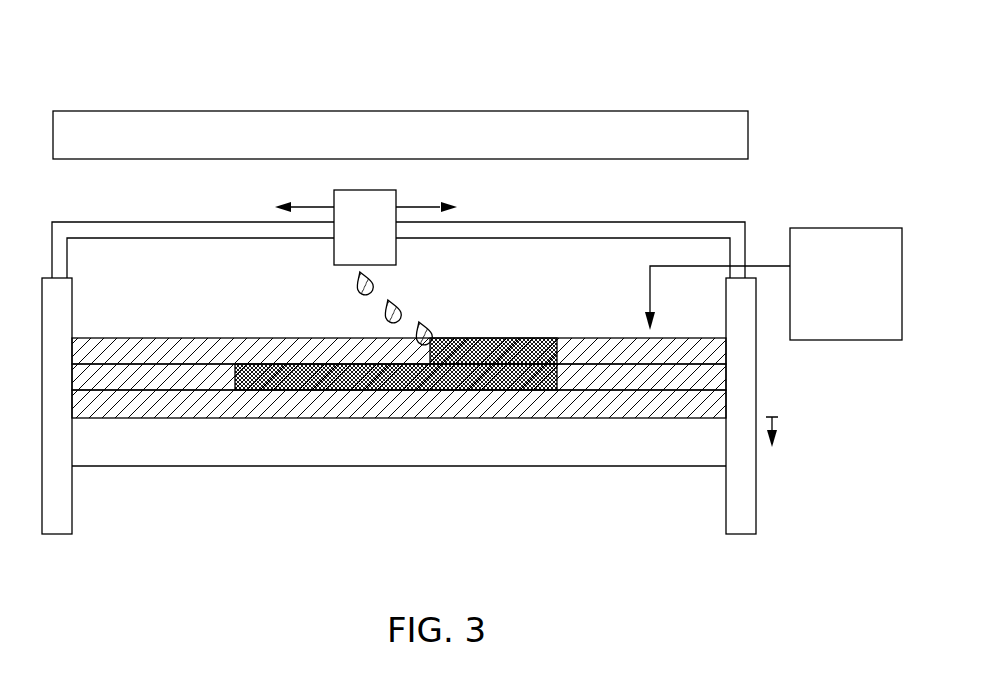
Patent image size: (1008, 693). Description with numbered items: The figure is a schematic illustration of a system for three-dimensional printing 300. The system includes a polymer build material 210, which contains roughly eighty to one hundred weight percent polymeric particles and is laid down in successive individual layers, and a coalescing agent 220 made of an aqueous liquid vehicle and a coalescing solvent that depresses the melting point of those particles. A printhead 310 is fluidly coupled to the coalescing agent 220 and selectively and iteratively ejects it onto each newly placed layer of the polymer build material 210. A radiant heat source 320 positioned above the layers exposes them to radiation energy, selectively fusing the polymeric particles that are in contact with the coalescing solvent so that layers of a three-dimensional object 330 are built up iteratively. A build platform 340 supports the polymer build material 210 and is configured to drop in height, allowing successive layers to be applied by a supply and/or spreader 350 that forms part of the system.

The system for three-dimensional printing 300 is at (158, 58).
The radiant heat source 320 is at (421, 147).
The printhead 310 is at (387, 238).
The coalescing agent 220 is at (355, 285).
The polymer build material 210 is at (140, 372).
The three-dimensional object 330 is at (360, 375).
The build platform 340 is at (537, 453).
The supply and/or spreader 350 is at (869, 295).